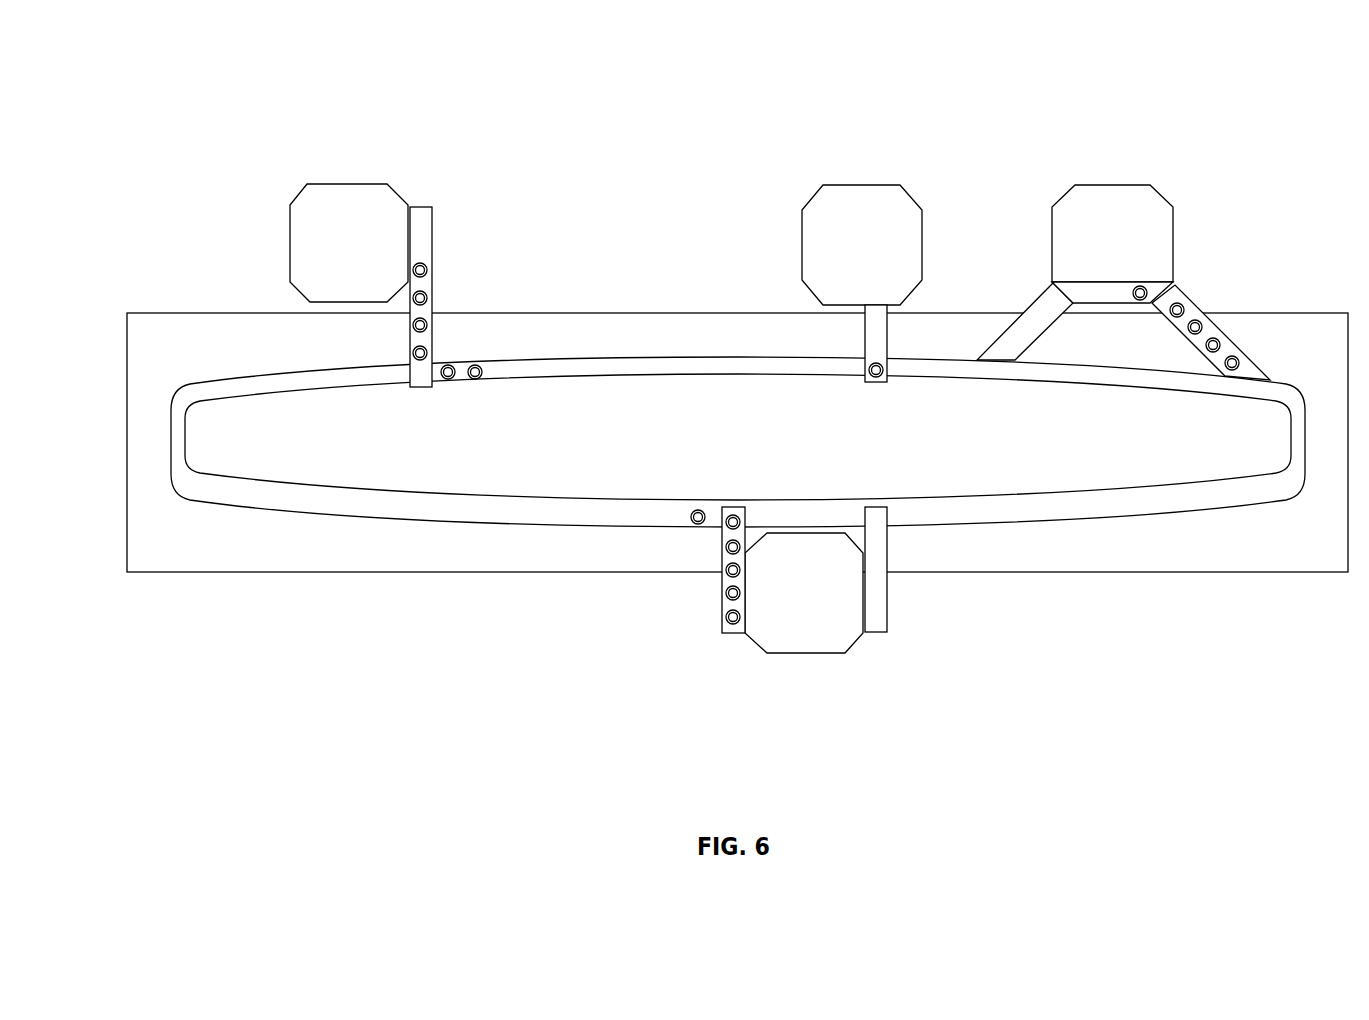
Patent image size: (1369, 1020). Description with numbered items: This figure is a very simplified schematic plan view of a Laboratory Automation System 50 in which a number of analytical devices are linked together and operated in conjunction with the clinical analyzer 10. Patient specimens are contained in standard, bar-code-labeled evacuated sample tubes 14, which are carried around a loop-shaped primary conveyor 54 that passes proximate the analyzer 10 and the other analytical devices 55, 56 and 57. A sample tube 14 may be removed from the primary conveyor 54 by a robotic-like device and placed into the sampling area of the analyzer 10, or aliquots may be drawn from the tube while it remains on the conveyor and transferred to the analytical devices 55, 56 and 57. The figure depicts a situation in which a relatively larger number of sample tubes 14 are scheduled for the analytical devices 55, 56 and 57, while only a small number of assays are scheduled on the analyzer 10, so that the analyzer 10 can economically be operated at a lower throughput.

The Laboratory Automation System 50 is at (212, 201).
The primary conveyor 54 is at (178, 468).
The analytical device 55 is at (372, 285).
The analyzer 10 is at (862, 283).
The analytical device 56 is at (1123, 282).
The analytical device 57 is at (789, 580).
The sample tube 14 is at (488, 372).